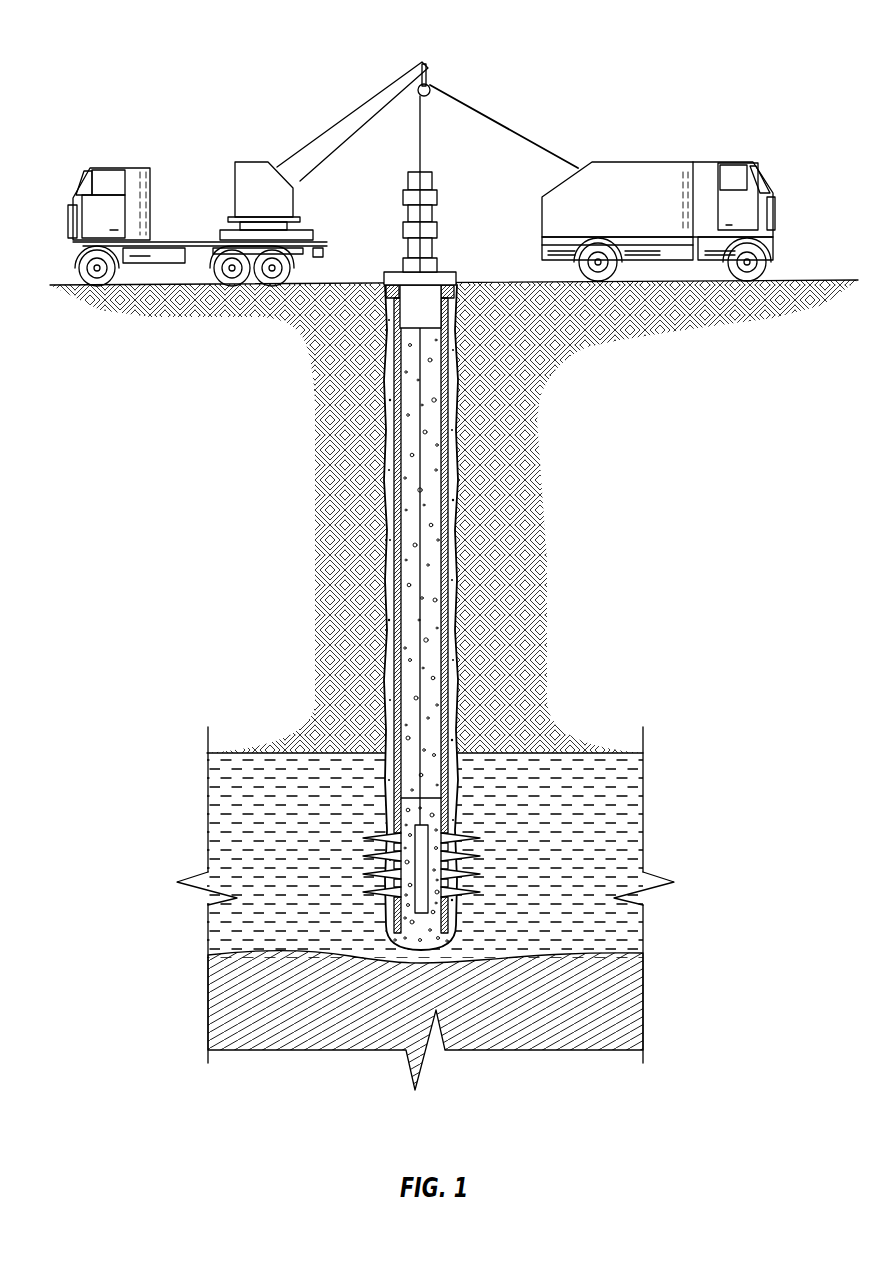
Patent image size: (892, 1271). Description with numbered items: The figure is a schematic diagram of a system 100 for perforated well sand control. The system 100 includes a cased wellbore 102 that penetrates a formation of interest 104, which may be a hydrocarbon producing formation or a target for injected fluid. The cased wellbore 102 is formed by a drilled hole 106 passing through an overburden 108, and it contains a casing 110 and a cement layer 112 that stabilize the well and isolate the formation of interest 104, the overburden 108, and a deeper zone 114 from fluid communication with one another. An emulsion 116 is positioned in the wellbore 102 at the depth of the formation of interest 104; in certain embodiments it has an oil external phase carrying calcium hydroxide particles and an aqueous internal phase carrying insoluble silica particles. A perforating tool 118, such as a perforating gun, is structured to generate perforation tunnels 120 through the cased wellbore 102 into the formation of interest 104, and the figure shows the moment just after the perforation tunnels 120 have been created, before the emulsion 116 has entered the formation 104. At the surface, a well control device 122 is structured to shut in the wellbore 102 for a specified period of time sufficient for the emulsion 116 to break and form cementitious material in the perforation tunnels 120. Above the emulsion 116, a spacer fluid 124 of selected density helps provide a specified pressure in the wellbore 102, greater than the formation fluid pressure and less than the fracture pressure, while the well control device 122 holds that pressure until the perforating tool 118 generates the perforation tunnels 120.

The system for perforated well sand control 100 is at (454, 573).
The cased wellbore 102 is at (386, 218).
The formation of interest 104 is at (575, 866).
The drilled hole 106 is at (388, 310).
The overburden 108 is at (727, 322).
The casing 110 is at (445, 297).
The cement layer 112 is at (453, 515).
The zone 114 is at (577, 1014).
The emulsion 116 is at (437, 808).
The perforating tool 118 is at (433, 903).
The perforation tunnels 120 is at (370, 838).
The well control device 122 is at (433, 232).
The spacer fluid 124 is at (430, 447).